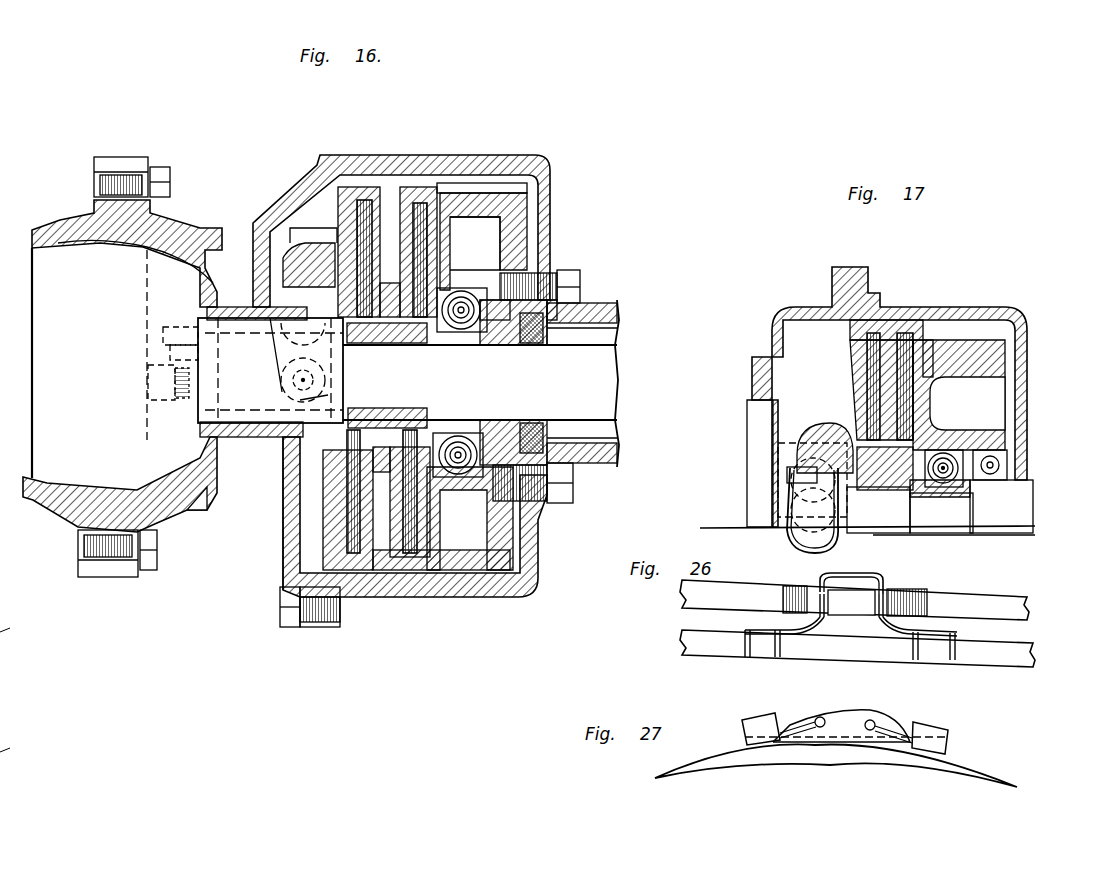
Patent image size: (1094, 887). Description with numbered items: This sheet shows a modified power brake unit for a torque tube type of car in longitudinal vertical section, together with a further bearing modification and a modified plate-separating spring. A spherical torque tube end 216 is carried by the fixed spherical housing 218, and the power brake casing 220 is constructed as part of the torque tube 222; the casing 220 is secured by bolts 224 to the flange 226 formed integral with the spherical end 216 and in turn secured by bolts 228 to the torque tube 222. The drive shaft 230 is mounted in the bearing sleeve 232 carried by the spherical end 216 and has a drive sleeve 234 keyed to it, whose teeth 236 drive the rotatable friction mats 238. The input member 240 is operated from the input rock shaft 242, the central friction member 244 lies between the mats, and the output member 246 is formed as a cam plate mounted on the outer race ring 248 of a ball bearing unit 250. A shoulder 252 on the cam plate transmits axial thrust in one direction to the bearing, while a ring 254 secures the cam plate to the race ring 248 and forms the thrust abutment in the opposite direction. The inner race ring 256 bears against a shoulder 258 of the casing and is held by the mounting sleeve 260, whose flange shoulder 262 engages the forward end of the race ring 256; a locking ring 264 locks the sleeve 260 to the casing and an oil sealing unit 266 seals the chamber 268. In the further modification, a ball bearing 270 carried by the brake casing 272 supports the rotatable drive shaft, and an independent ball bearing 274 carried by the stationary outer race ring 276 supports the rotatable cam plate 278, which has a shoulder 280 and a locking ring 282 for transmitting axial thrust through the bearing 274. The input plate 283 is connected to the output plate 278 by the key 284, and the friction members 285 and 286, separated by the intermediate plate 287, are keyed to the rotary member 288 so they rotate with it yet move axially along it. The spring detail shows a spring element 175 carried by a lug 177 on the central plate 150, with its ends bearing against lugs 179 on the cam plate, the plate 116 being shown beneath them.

In FIG. 16, the spherical torque tube end 216 is at (163, 230).
In FIG. 16, the spherical housing 218 is at (45, 512).
In FIG. 16, the bearing sleeve 232 is at (217, 300).
In FIG. 16, the flange shoulder 262 is at (274, 370).
In FIG. 16, the drive shaft 230 is at (598, 372).
In FIG. 16, the torque tube 222 is at (612, 310).
In FIG. 16, the power brake casing 220 is at (448, 168).
In FIG. 16, the flange 226 is at (290, 522).
In FIG. 16, the input rock shaft 242 is at (290, 252).
In FIG. 16, the bolts 224 is at (283, 605).
In FIG. 16, the bolts 228 is at (562, 484).
In FIG. 16, the input member 240 is at (349, 187).
In FIG. 16, the central friction member 244 is at (413, 190).
In FIG. 16, the rotatable friction mats 238 is at (366, 200).
In FIG. 16, the teeth 236 is at (340, 443).
In FIG. 16, the drive sleeve 234 is at (346, 437).
In FIG. 16, the output member 246 is at (500, 195).
In FIG. 16, the chamber 268 is at (470, 190).
In FIG. 16, the outer race ring 248 is at (462, 300).
In FIG. 16, the shoulder 252 is at (443, 293).
In FIG. 16, the ball bearing unit 250 is at (520, 272).
In FIG. 16, the shoulder 258 is at (552, 270).
In FIG. 16, the ring 254 is at (552, 205).
In FIG. 16, the inner race ring 256 is at (472, 330).
In FIG. 16, the mounting sleeve 260 is at (513, 342).
In FIG. 16, the locking ring 264 is at (560, 300).
In FIG. 16, the oil sealing unit 266 is at (552, 322).
In FIG. 17, the brake casing 272 is at (1027, 355).
In FIG. 17, the key 284 is at (890, 323).
In FIG. 17, the input plate 283 is at (850, 365).
In FIG. 17, the intermediate plate 287 is at (873, 381).
In FIG. 17, the friction member 285 is at (860, 403).
In FIG. 17, the friction member 286 is at (955, 337).
In FIG. 17, the cam plate 278 is at (928, 347).
In FIG. 17, the locking ring 282 is at (930, 425).
In FIG. 17, the independent ball bearing 274 is at (937, 442).
In FIG. 17, the shoulder 280 is at (948, 450).
In FIG. 17, the rotary member 288 is at (877, 490).
In FIG. 17, the stationary outer race ring 276 is at (925, 494).
In FIG. 17, the ball bearing 270 is at (973, 490).
In FIG. 26, the central plate 150 is at (977, 600).
In FIG. 26, the lower bar 116 is at (1005, 652).
In FIG. 27, the lower bar 116 is at (855, 750).
In FIG. 26, the spring element 175 is at (855, 578).
In FIG. 27, the spring element 175 is at (838, 720).
In FIG. 26, the lug 177 is at (890, 597).
In FIG. 27, the lug 177 is at (863, 712).
In FIG. 26, the lugs 179 is at (760, 650).
In FIG. 27, the lugs 179 is at (760, 718).